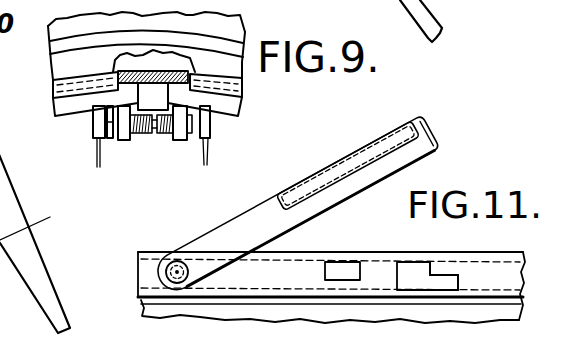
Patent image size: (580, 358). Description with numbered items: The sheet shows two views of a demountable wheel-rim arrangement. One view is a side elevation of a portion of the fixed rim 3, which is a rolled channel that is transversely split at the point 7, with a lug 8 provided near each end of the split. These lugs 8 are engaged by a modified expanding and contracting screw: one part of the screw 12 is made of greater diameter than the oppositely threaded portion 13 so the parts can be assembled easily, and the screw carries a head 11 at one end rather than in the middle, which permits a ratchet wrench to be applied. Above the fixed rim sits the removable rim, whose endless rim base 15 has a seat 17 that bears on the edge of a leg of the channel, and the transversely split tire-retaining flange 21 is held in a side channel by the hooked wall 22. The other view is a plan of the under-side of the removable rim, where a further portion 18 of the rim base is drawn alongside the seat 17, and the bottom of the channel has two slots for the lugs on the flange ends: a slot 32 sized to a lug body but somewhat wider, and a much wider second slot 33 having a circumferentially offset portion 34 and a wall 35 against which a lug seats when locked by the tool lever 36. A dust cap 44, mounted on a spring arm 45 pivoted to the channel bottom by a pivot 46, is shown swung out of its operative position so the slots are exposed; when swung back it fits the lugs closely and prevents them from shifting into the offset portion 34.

In FIG. 9, the fixed rim 3 is at (57, 110).
In FIG. 9, the split point 7 is at (153, 92).
In FIG. 9, the lug 8 is at (120, 140).
In FIG. 9, the screw head 11 is at (92, 126).
In FIG. 9, the screw part of greater diameter 12 is at (141, 134).
In FIG. 9, the oppositely threaded portion 13 is at (163, 134).
In FIG. 9, the transversely split removable tire-retaining flange 21 is at (146, 46).
In FIG. 9, the hooked wall of the channel 22 is at (238, 97).
In FIG. 11, the lever 36 is at (415, 13).
In FIG. 11, the endless rim base 15 is at (163, 308).
In FIG. 11, the seat 17 is at (213, 298).
In FIG. 11, the plate lower edge 18 is at (263, 299).
In FIG. 11, the slot 32 is at (347, 248).
In FIG. 11, the second slot 33 is at (407, 269).
In FIG. 11, the circumferentially offset portion 34 is at (457, 282).
In FIG. 11, the wall of the slot 35 is at (436, 267).
In FIG. 11, the dust cap 44 is at (300, 188).
In FIG. 11, the spring arm 45 is at (228, 235).
In FIG. 11, the pivot 46 is at (167, 271).